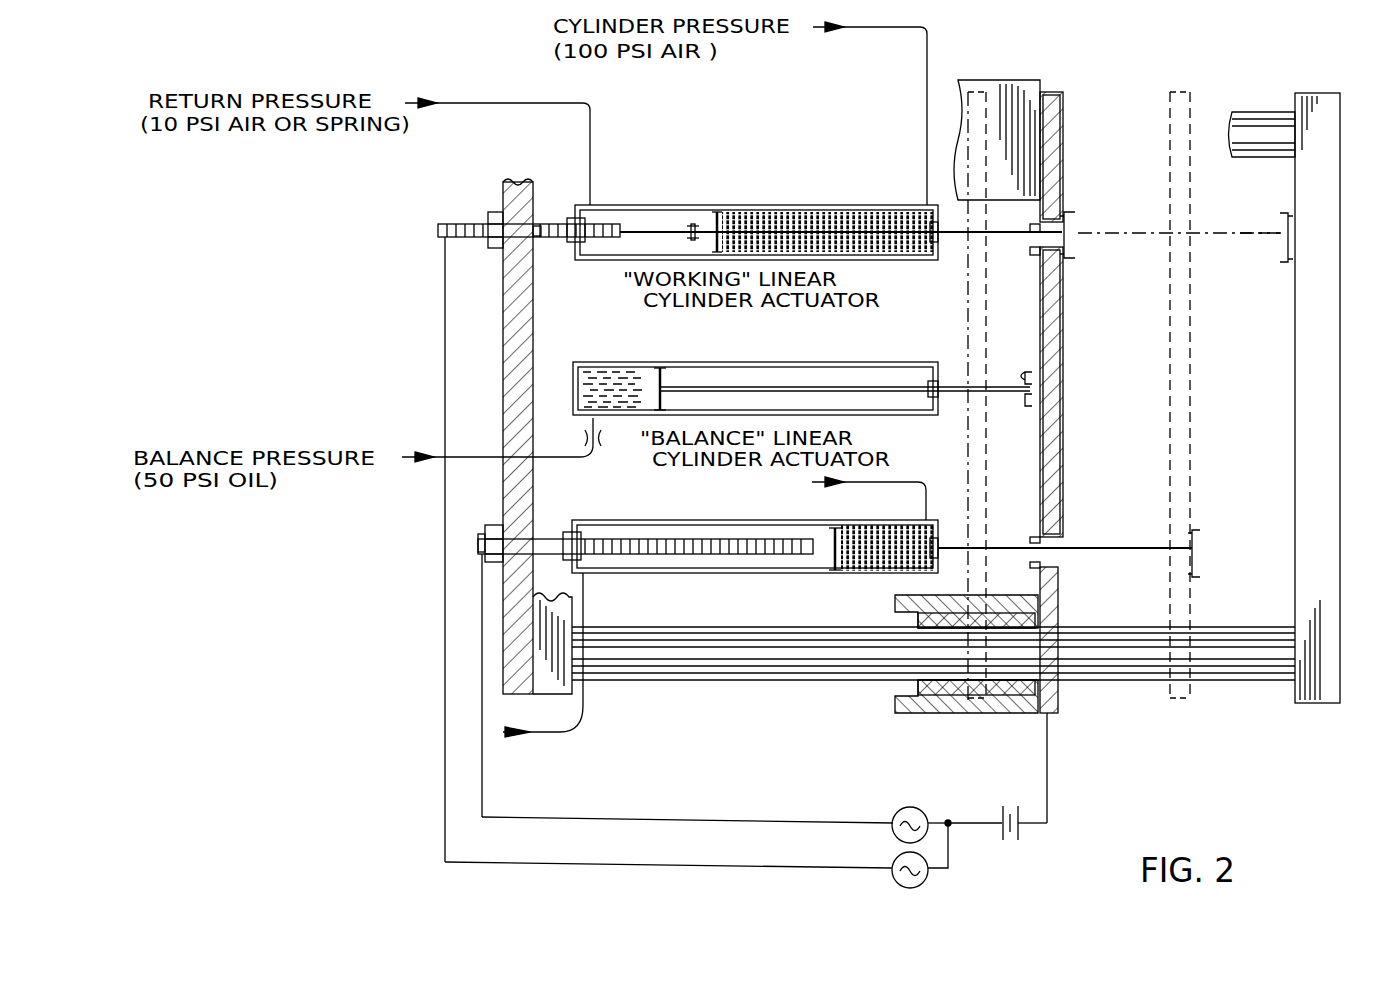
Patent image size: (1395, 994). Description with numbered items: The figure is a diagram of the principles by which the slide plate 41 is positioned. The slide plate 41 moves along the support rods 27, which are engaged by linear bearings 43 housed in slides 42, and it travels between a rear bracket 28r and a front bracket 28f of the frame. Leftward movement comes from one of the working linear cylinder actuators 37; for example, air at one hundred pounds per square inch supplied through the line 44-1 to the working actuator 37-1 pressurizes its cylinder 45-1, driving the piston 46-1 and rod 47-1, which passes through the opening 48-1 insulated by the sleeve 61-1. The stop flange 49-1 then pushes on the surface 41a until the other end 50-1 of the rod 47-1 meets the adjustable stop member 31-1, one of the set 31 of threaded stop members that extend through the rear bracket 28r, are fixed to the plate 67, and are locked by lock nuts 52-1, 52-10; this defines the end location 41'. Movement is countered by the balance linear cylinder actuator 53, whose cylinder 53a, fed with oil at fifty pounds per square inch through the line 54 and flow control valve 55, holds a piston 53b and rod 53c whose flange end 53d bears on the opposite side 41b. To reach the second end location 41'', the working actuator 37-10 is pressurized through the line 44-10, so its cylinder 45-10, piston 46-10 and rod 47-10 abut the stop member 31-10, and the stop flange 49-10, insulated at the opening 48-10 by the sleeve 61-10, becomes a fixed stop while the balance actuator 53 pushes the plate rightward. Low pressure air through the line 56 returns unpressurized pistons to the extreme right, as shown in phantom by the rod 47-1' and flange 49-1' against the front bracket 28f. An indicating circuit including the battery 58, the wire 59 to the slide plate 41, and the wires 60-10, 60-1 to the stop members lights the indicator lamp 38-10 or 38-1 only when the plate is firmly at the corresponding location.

The support rods 27 is at (1247, 118).
The rear bracket 28r is at (553, 690).
The front bracket 28f is at (1300, 705).
The adjustable stop members 31 is at (555, 242).
The adjustable stop member 31-1 is at (440, 232).
The adjustable stop member 31-10 is at (478, 546).
The working linear cylinder actuators 37 is at (624, 203).
The working actuator 37-1 is at (815, 208).
The working actuator 37-10 is at (698, 580).
The indicator lamp 38-1 is at (895, 860).
The indicator lamp 38-10 is at (895, 812).
The slide plate 41 is at (1053, 371).
The end location 41' is at (997, 365).
The end location 41'' is at (1178, 364).
The surface of slide plate 41a is at (1064, 142).
The side of slide plate 41b is at (1040, 292).
The slides 42 is at (905, 708).
The linear bearings 43 is at (955, 713).
The line 44-1 is at (925, 98).
The line 44-10 is at (922, 512).
The cylinder 45-1 is at (765, 220).
The cylinder 45-10 is at (882, 568).
The piston 46-1 is at (716, 222).
The piston 46-10 is at (838, 568).
The piston rod 47-1 is at (1111, 258).
The piston rod 47-1' is at (1249, 266).
The piston rod 47-10 is at (1163, 545).
The opening 48-1 is at (1044, 230).
The opening 48-10 is at (1045, 563).
The stop flange 49-1 is at (1100, 219).
The stop flange 49-1' is at (1266, 217).
The stop flange 49-10 is at (1200, 545).
The other end of piston rod 50-1 is at (691, 228).
The lock nut 52-1 is at (490, 248).
The lock nut 52-10 is at (492, 562).
The balance linear cylinder actuator 53 is at (608, 358).
The cylinder 53a is at (762, 374).
The piston 53b is at (658, 382).
The rod 53c is at (1018, 398).
The blunt or flange end 53d is at (1035, 372).
The line 54 is at (548, 460).
The flow control valve 55 is at (590, 438).
The line 56 is at (588, 128).
The battery 58 is at (1006, 836).
The electrical wire 59 is at (1050, 770).
The wire 60-1 is at (556, 862).
The wire 60-10 is at (645, 817).
The insulating sleeve 61-1 is at (1050, 255).
The insulating sleeve 61-10 is at (1060, 540).
The plate 67 is at (510, 374).